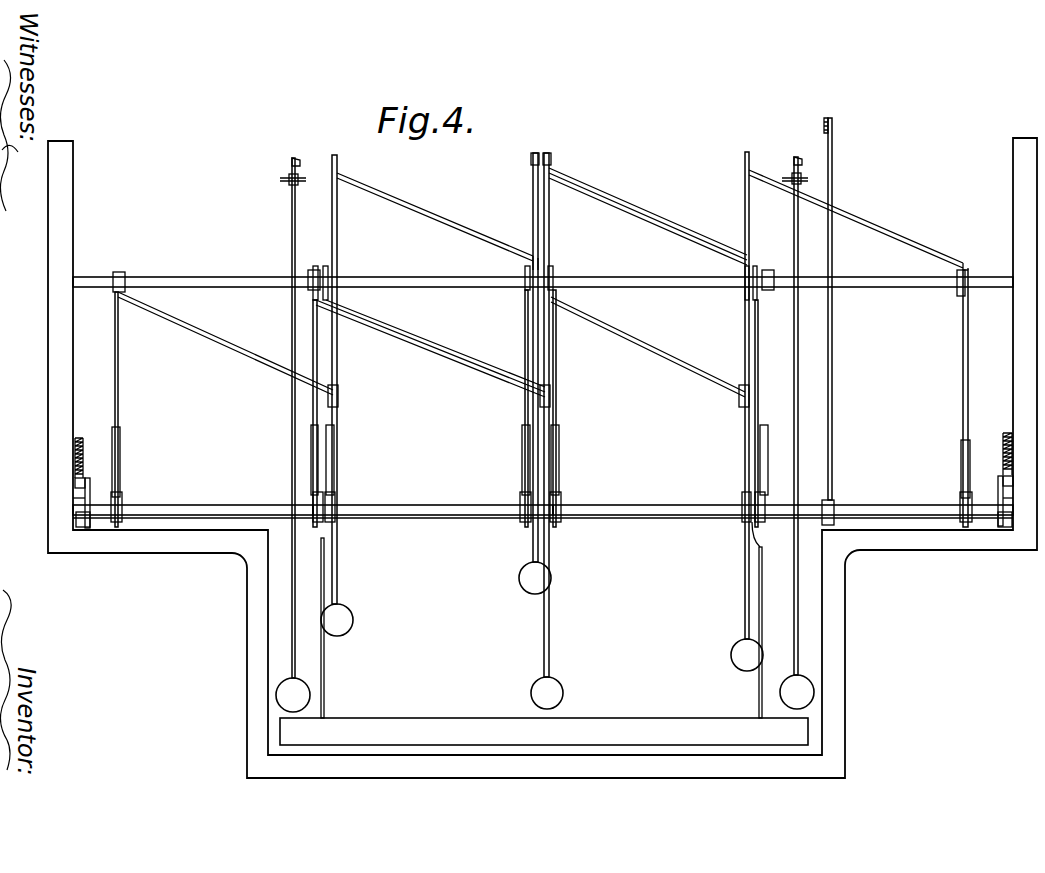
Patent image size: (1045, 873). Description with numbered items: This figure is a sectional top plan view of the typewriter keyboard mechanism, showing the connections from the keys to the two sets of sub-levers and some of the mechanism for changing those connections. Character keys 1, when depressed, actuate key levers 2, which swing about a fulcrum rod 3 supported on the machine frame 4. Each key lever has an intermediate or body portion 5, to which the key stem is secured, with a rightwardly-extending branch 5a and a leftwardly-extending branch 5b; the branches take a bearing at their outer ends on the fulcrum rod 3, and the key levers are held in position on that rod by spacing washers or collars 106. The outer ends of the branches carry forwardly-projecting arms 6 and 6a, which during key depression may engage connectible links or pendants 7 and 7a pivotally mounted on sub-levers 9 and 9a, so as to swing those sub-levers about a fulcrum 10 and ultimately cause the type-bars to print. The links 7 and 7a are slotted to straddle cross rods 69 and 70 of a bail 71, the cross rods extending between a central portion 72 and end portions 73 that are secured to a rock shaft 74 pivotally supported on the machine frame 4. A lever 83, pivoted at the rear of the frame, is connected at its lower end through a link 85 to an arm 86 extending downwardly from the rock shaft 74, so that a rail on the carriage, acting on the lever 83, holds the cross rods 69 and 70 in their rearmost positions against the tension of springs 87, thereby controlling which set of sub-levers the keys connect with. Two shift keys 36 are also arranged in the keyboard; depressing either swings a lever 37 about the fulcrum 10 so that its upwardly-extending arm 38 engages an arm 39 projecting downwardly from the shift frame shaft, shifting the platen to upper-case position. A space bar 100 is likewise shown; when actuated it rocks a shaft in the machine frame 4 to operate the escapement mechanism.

The character key 1 is at (530, 586).
The key lever 2 is at (543, 145).
The fulcrum rod 3 is at (186, 277).
The machine frame 4 is at (47, 300).
The intermediate portion of key lever 5 is at (539, 215).
The rightwardly-extending branch 5a is at (440, 214).
The leftwardly-extending branch 5b is at (189, 328).
The forwardly-projecting arm 6 is at (557, 386).
The forwardly-projecting arm 6a is at (118, 393).
The link 7 is at (554, 528).
The link 7a is at (123, 499).
The sub-lever 9 is at (557, 466).
The sub-lever 9a is at (112, 436).
The fulcrum 10 is at (283, 181).
The shift key 36 is at (300, 680).
The shift lever 37 is at (291, 316).
The upwardly-extending arm 38 is at (297, 168).
The arm 39 is at (298, 183).
The cross rod 69 is at (656, 506).
The cross rod 70 is at (424, 506).
The bail 71 is at (174, 499).
The central portion of bail 72 is at (525, 527).
The end portion of bail 73 is at (74, 496).
The rock shaft 74 is at (435, 519).
The lever 83 is at (827, 120).
The link 85 is at (832, 428).
The arm 86 is at (824, 503).
The spring 87 is at (83, 452).
The space bar 100 is at (398, 718).
The spacing collar 106 is at (322, 270).